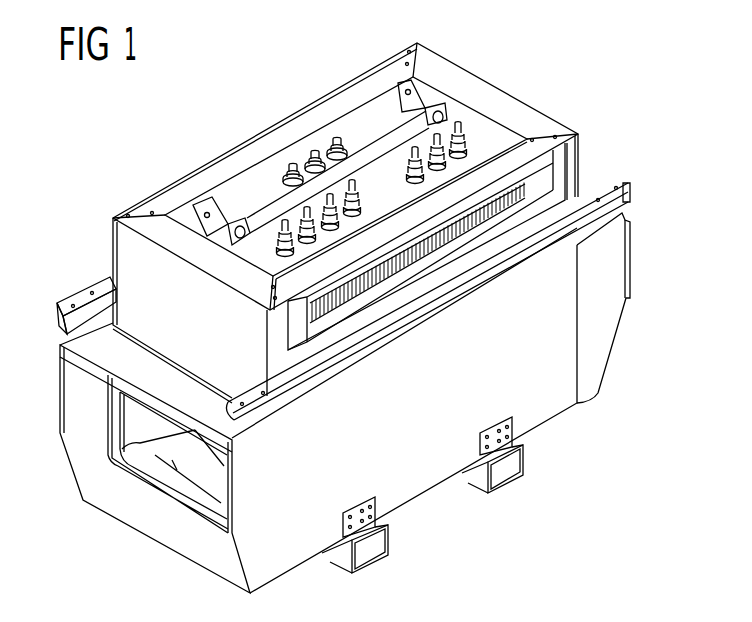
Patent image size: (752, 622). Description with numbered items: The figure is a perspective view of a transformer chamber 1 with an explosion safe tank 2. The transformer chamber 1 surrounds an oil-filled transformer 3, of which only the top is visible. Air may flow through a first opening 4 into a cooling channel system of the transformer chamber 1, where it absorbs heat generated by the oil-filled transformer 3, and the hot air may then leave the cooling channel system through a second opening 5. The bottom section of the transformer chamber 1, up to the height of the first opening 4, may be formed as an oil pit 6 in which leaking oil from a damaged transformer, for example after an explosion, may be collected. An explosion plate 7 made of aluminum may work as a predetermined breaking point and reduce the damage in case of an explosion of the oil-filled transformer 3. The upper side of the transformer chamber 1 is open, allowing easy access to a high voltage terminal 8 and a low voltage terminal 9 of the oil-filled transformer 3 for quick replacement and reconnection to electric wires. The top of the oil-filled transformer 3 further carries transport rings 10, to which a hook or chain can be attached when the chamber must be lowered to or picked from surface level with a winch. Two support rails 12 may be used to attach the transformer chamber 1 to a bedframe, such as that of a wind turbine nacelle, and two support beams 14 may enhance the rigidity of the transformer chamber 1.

The transformer chamber 1 is at (545, 55).
The explosion safe tank 2 is at (416, 476).
The oil-filled transformer 3 is at (356, 130).
The first opening 4 is at (132, 462).
The second opening 5 is at (545, 183).
The oil pit 6 is at (200, 492).
The explosion plate 7 is at (172, 462).
The high voltage terminal 8 is at (310, 158).
The low voltage terminal 9 is at (468, 120).
The transport rings 10 is at (238, 222).
The support rails 12 is at (80, 290).
The support beams 14 is at (372, 570).